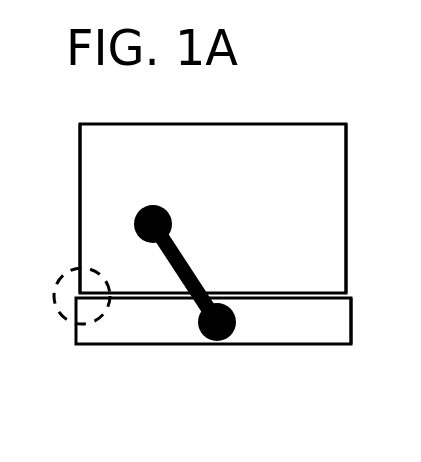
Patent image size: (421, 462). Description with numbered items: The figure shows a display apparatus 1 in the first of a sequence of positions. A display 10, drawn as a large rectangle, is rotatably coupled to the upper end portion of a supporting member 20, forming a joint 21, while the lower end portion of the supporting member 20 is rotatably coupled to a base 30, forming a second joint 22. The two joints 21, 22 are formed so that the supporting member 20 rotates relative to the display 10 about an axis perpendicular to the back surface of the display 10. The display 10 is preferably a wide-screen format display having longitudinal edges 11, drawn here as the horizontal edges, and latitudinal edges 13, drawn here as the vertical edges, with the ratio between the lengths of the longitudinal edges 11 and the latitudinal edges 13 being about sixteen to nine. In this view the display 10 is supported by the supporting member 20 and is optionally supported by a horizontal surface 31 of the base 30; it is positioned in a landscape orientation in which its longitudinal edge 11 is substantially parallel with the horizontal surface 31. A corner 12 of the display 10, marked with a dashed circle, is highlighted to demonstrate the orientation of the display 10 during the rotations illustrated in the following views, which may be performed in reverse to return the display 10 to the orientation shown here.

The display apparatus 1 is at (295, 79).
The display 10 is at (322, 134).
The longitudinal edge 11 is at (321, 290).
The corner 12 is at (69, 284).
The latitudinal edge 13 is at (69, 146).
The supporting member 20 is at (190, 267).
The joint 21 is at (161, 206).
The joint 22 is at (229, 305).
The base 30 is at (138, 317).
The horizontal surface 31 is at (323, 294).